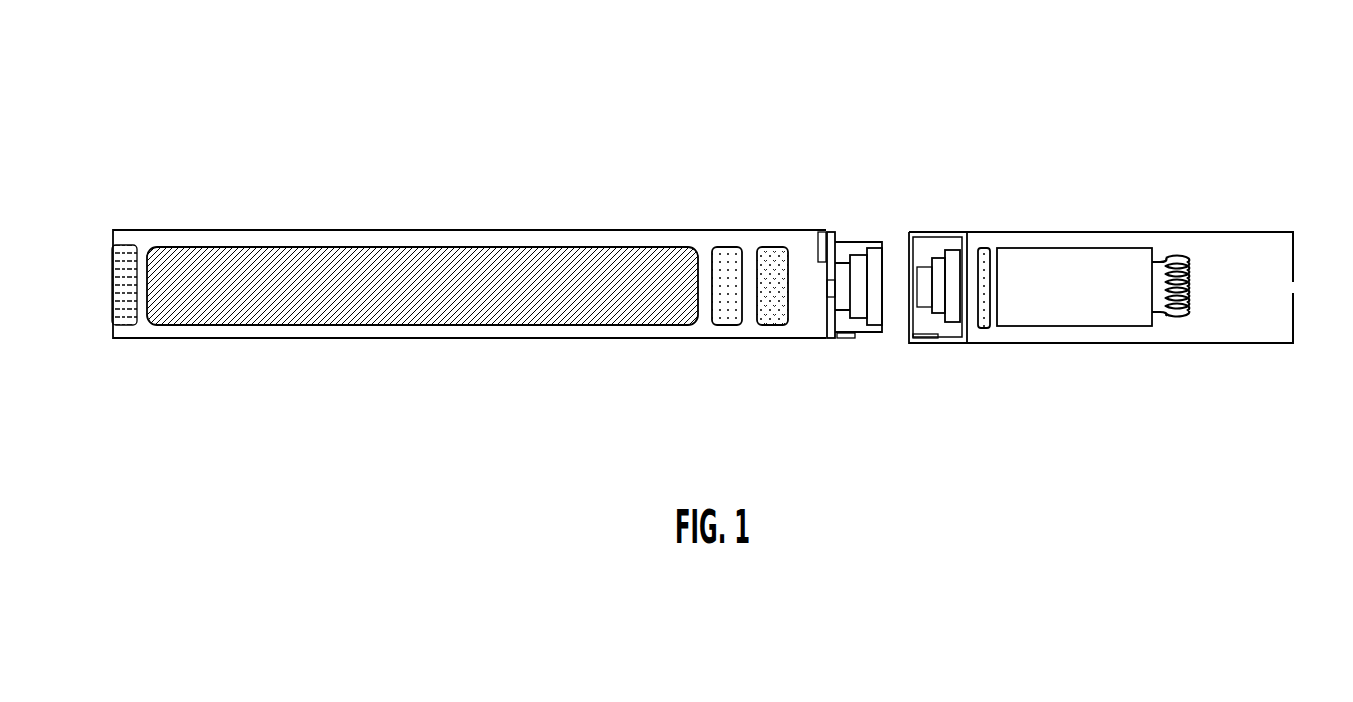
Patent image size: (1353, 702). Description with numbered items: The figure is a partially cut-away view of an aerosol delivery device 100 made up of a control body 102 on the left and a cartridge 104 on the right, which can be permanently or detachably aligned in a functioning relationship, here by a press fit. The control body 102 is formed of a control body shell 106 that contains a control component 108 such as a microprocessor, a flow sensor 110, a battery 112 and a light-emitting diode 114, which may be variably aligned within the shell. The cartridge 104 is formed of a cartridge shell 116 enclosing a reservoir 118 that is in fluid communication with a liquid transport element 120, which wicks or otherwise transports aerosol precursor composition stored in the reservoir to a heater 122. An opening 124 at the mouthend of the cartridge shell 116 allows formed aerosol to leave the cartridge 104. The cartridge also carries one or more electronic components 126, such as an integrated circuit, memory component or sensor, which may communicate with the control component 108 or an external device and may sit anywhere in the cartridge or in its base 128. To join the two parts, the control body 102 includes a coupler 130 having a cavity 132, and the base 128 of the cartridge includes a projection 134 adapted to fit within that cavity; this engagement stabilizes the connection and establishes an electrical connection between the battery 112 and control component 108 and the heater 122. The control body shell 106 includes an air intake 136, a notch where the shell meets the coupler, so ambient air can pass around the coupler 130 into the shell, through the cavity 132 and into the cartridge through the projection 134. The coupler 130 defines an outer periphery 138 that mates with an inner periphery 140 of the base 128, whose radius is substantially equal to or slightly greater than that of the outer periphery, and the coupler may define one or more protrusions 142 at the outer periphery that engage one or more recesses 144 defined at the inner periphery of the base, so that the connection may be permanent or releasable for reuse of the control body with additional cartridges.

The aerosol delivery device 100 is at (200, 114).
The control body 102 is at (180, 185).
The cartridge 104 is at (1108, 195).
The control body shell 106 is at (469, 309).
The control component 108 is at (727, 247).
The flow sensor 110 is at (754, 318).
The battery 112 is at (422, 318).
The light-emitting diode 114 is at (145, 317).
The cartridge shell 116 is at (1101, 328).
The reservoir 118 is at (1074, 313).
The liquid transport element 120 is at (1197, 324).
The heater 122 is at (1220, 318).
The opening 124 is at (1290, 282).
The electronic components 126 is at (1007, 313).
The base 128 is at (965, 323).
The coupler 130 is at (884, 322).
The cavity 132 is at (862, 248).
The projection 134 is at (938, 257).
The air intake 136 is at (822, 232).
The outer periphery 138 is at (867, 247).
The inner periphery 140 is at (932, 240).
The protrusions 142 is at (868, 378).
The recesses 144 is at (951, 386).